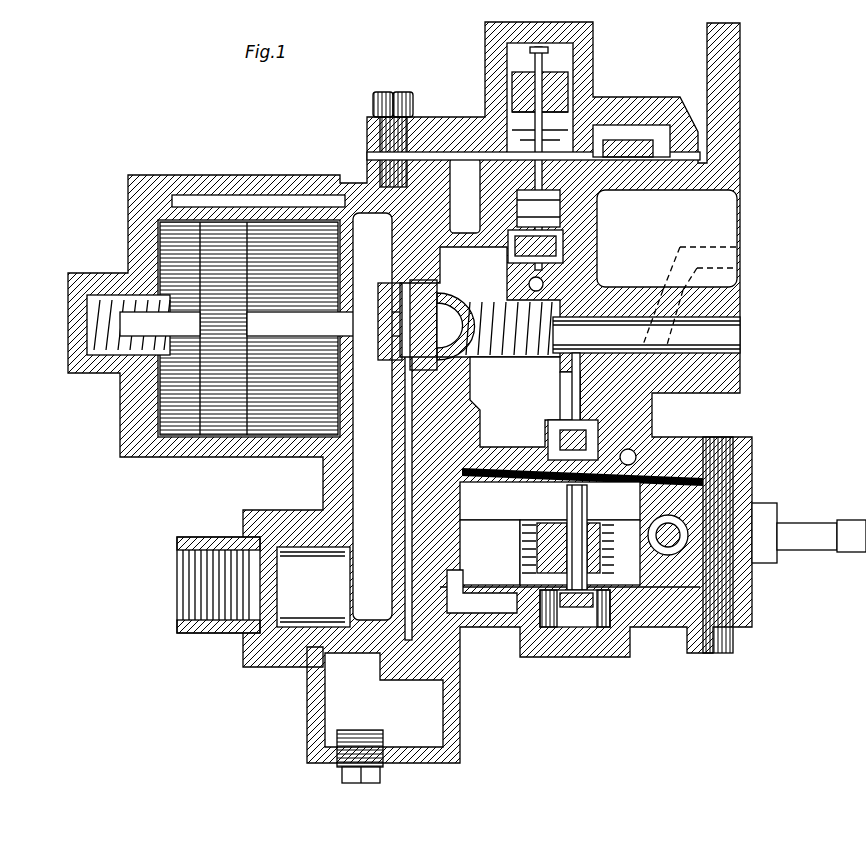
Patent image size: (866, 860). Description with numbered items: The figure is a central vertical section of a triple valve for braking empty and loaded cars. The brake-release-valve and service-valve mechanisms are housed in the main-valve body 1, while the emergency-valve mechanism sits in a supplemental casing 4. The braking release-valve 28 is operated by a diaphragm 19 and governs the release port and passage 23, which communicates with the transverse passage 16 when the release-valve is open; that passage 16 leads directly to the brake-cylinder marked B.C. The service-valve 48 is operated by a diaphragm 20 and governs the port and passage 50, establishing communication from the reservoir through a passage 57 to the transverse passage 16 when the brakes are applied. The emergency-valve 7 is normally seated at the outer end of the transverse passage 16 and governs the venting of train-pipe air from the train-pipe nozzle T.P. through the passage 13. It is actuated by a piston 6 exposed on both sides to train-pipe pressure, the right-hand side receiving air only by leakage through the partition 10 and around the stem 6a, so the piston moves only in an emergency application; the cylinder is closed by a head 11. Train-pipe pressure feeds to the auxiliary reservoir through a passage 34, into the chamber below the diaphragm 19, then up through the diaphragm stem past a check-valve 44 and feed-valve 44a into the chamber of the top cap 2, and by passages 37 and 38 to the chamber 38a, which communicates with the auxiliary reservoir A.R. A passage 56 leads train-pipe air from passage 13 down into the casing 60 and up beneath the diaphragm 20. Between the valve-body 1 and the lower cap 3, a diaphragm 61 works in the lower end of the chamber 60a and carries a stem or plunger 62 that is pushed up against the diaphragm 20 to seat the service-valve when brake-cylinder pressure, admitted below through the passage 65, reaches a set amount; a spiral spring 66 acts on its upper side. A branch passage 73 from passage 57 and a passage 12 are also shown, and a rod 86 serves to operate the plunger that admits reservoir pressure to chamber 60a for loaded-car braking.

The main-valve body 1 is at (718, 383).
The top cap 2 is at (595, 50).
The lower cap 3 is at (550, 648).
The supplemental casing 4 is at (190, 460).
The piston 6 is at (240, 400).
The stem of the piston 6a is at (273, 330).
The emergency-valve 7 is at (378, 295).
The partition 10 is at (310, 230).
The cylinder head 11 is at (232, 197).
The passage 12 is at (670, 548).
The passage 13 is at (372, 416).
The transverse passage 16 is at (646, 335).
The diaphragm 19 is at (617, 160).
The diaphragm 20 is at (545, 445).
The release port and passage 23 is at (585, 280).
The braking release-valve 28 is at (585, 253).
The passage 34 is at (407, 223).
The passage 37 is at (623, 130).
The passage 38 is at (662, 160).
The chamber 38a is at (723, 228).
The check-valve 44 is at (507, 110).
The feed-valve 44a is at (523, 92).
The service-valve 48 is at (557, 417).
The port and passage 50 is at (557, 400).
The passage 56 is at (395, 430).
The passage 57 is at (655, 406).
The casing 60 is at (755, 503).
The chamber 60a is at (490, 552).
The diaphragm 61 is at (605, 592).
The stem or plunger 62 is at (570, 532).
The passage 65 is at (493, 612).
The spiral spring 66 is at (630, 585).
The branch passage 73 is at (640, 460).
The rod 86 is at (825, 548).
The auxiliary reservoir A.R. is at (723, 207).
The brake-cylinder B.C. is at (740, 340).
The train-pipe nozzle T.P. is at (263, 585).